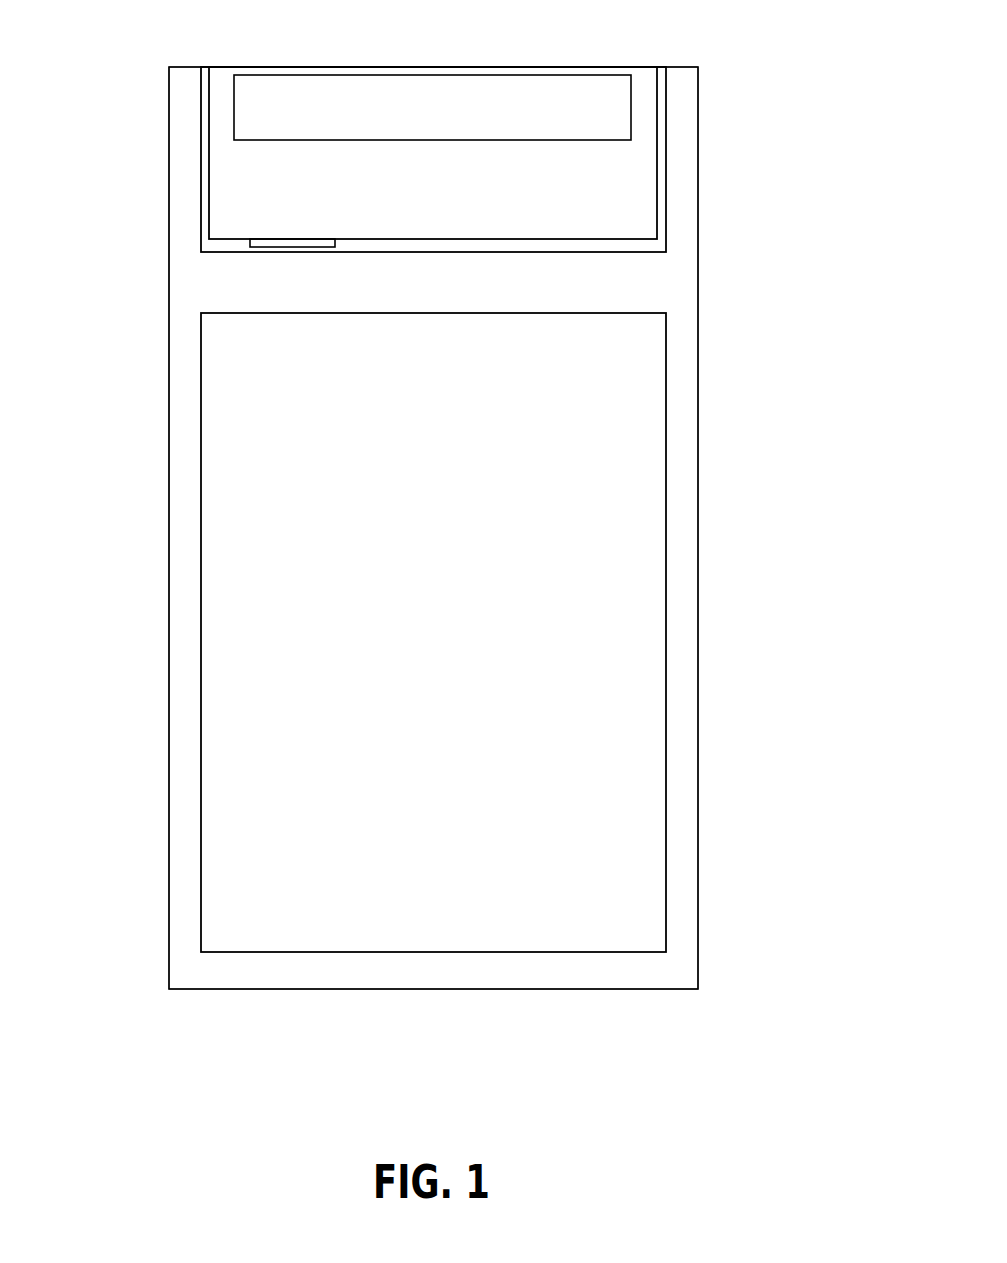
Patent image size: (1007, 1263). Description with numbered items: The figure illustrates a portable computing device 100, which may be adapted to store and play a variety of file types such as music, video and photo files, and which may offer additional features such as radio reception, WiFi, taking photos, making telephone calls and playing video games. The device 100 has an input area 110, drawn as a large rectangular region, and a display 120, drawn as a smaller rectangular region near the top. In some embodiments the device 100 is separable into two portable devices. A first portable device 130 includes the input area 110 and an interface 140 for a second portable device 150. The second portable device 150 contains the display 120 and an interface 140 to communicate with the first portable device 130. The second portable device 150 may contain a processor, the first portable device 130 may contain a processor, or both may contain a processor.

The portable computing device 100 is at (729, 163).
The input area 110 is at (565, 593).
The display 120 is at (598, 125).
The first portable device 130 is at (367, 988).
The interface 140 is at (292, 238).
The second portable device 150 is at (582, 223).